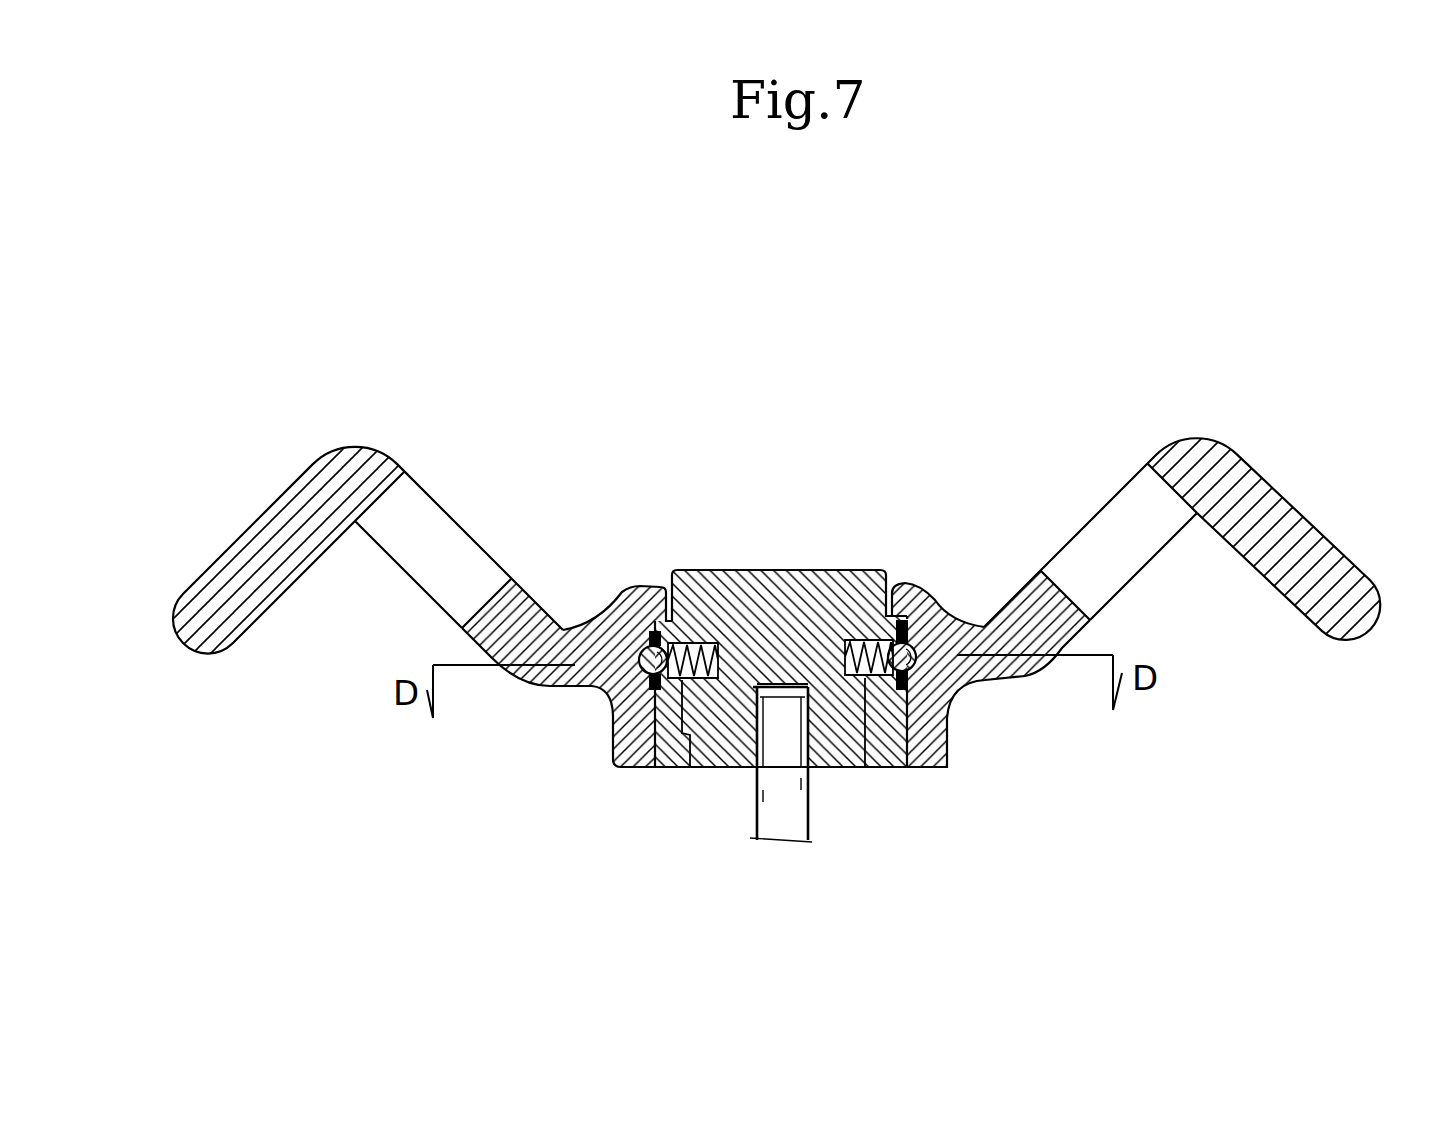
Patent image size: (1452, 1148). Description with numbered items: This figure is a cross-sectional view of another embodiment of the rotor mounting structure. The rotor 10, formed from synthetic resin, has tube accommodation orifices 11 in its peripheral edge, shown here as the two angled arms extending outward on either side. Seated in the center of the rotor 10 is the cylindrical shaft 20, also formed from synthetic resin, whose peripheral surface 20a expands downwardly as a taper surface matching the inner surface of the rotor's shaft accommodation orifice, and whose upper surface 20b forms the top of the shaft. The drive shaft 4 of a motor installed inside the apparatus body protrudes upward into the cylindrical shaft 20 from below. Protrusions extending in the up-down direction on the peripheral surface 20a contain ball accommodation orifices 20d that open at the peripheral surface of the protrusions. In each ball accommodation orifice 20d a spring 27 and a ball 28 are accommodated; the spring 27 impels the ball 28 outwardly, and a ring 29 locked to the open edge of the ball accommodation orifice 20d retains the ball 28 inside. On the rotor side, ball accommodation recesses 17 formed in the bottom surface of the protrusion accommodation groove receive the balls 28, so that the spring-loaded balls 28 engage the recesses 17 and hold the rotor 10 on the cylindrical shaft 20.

The drive shaft 4 is at (795, 788).
The rotor 10 is at (776, 604).
The tube accommodation orifices 11 is at (318, 643).
The ball accommodation recesses 17 is at (604, 610).
The cylindrical shaft 20 is at (784, 660).
The peripheral surface 20a is at (620, 768).
The upper surface 20b is at (815, 567).
The ball accommodation orifices 20d is at (690, 767).
The spring 27 is at (695, 643).
The ball 28 is at (648, 632).
The ring 29 is at (600, 740).